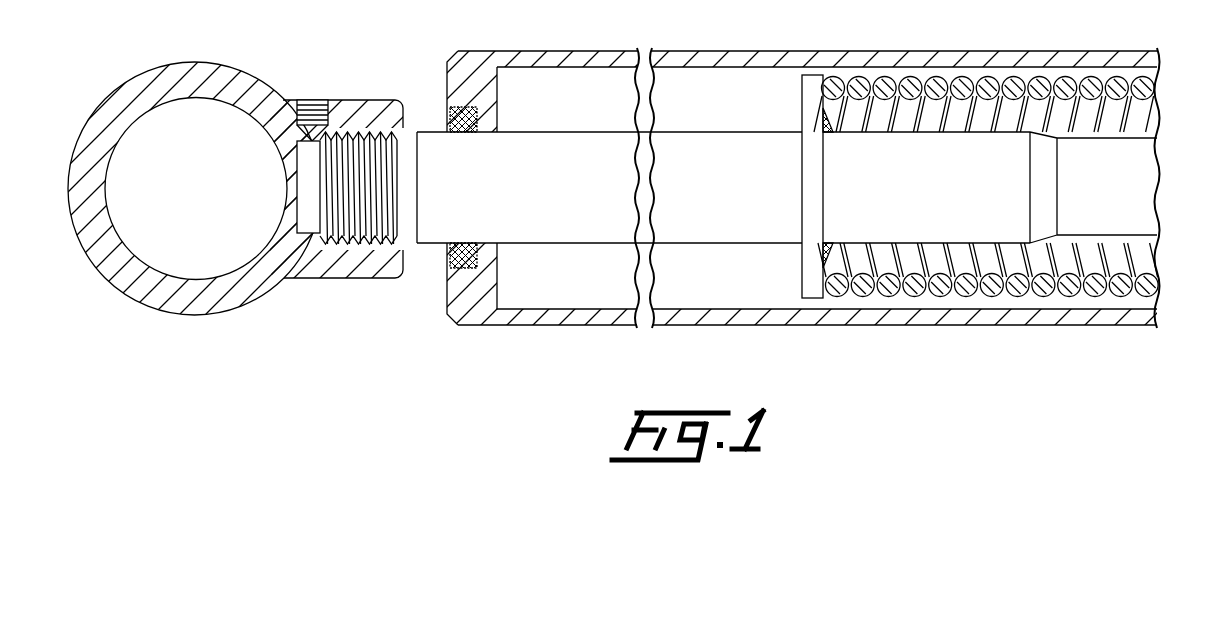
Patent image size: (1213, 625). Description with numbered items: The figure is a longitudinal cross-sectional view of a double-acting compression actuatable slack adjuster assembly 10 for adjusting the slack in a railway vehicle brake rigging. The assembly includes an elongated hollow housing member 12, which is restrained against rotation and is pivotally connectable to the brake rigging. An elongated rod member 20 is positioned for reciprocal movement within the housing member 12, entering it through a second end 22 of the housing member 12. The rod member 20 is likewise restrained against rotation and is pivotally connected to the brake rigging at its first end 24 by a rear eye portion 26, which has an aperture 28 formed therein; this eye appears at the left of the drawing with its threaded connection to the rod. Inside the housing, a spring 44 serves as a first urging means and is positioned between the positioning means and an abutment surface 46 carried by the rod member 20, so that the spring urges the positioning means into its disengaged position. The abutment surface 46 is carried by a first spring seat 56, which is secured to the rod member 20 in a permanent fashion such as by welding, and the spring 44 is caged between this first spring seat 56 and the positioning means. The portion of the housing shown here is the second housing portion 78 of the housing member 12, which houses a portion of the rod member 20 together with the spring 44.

The slack adjuster assembly 10 is at (766, 50).
The housing member 12 is at (994, 51).
The rod member 20 is at (1158, 204).
The second end 22 is at (82, 126).
The first end 24 is at (356, 140).
The rear eye portion 26 is at (246, 90).
The aperture 28 is at (210, 179).
The spring 44 is at (1091, 86).
The abutment surface 46 is at (826, 262).
The first spring seat 56 is at (812, 90).
The second housing portion 78 is at (563, 60).